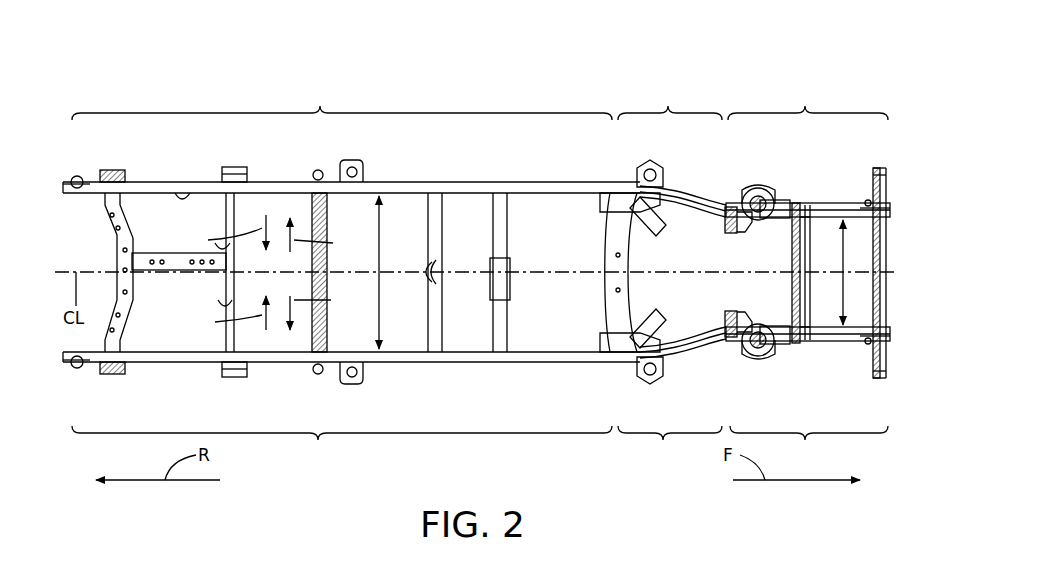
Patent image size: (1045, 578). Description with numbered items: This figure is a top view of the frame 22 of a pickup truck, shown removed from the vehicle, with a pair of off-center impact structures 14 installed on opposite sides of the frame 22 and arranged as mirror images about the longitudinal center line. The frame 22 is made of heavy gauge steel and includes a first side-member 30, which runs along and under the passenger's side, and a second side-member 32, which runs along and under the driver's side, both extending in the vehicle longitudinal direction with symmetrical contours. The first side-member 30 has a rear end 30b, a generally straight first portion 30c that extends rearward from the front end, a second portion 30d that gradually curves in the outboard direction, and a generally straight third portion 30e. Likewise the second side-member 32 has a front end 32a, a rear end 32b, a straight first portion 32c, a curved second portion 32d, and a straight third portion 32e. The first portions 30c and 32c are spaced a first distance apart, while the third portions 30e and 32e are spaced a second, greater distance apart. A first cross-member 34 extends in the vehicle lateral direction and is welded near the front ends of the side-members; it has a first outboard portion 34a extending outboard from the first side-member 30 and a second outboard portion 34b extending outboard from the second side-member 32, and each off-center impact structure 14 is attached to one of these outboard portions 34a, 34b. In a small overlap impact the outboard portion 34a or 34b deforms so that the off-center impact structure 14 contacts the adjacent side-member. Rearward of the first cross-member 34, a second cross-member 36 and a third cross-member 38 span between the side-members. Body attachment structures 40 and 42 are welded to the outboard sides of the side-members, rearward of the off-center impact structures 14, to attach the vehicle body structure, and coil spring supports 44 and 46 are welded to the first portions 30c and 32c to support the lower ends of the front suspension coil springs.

The frame 22 is at (762, 47).
The second side-member 32 is at (501, 181).
The front end of second side-member 32a is at (890, 205).
The rear end of second side-member 32b is at (58, 178).
The first portion of second side-member 32c is at (808, 102).
The second portion of second side-member 32d is at (670, 102).
The third portion of second side-member 32e is at (342, 102).
The first side-member 30 is at (494, 363).
The rear end of first side-member 30b is at (58, 366).
The first portion of first side-member 30c is at (809, 445).
The second portion of first side-member 30d is at (670, 445).
The third portion of first side-member 30e is at (342, 445).
The first cross-member 34 is at (886, 252).
The first outboard portion of first cross-member 34a is at (872, 378).
The second outboard portion of first cross-member 34b is at (872, 168).
The second cross-member 36 is at (792, 290).
The third cross-member 38 is at (608, 243).
The body attachment structure 40 is at (770, 345).
The body attachment structure 42 is at (828, 200).
The coil spring support 44 is at (762, 362).
The coil spring support 46 is at (758, 184).
The off-center impact structure 14 is at (866, 196).